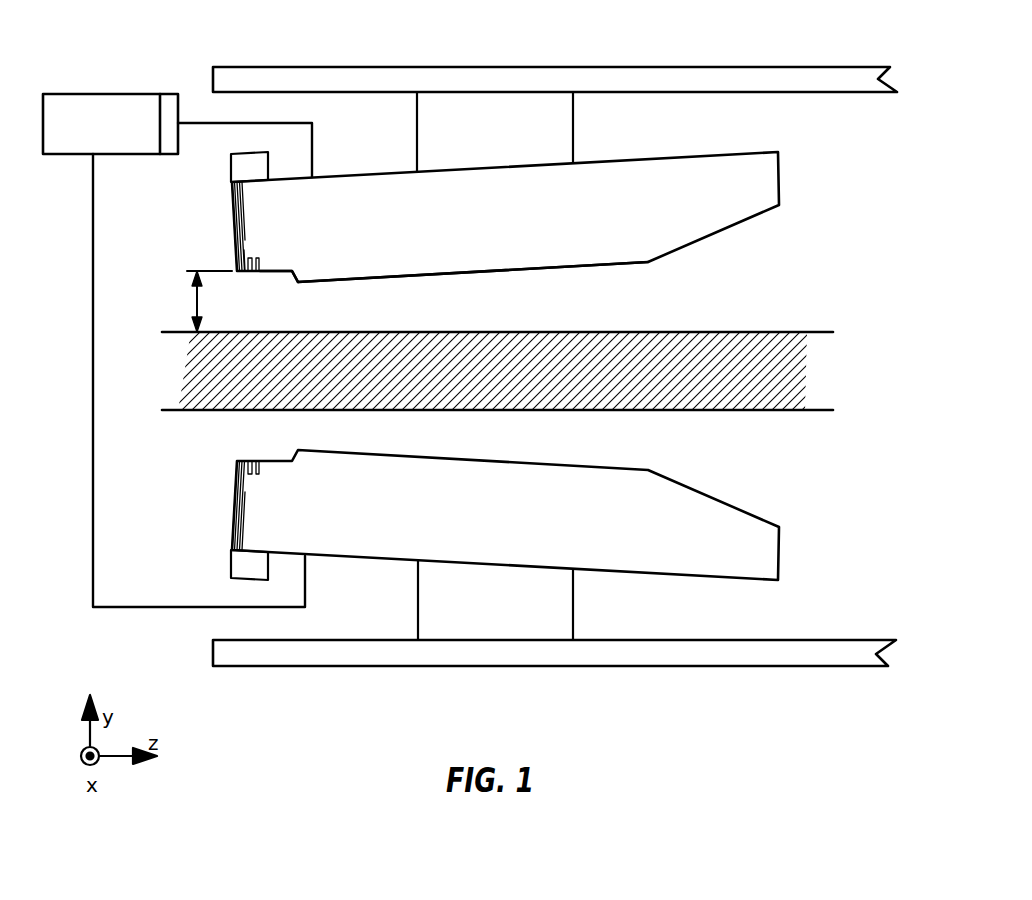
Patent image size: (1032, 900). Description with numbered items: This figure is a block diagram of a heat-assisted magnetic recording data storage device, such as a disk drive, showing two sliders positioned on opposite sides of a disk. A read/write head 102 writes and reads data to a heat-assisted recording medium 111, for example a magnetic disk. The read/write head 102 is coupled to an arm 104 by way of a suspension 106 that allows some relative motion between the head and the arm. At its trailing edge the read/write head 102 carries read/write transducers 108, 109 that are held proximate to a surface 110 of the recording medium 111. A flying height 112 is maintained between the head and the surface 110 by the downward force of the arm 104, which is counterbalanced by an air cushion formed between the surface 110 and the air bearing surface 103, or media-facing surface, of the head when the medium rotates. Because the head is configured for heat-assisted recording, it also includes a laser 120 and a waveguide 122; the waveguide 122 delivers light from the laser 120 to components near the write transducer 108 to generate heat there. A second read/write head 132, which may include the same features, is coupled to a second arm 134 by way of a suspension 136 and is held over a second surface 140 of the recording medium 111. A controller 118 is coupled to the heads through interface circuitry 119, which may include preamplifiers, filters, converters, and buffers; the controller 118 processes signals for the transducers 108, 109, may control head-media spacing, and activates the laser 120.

The read/write head 102 is at (688, 162).
The air bearing surface 103 is at (382, 283).
The arm 104 is at (733, 73).
The suspension 106 is at (575, 123).
The write transducer 108 is at (240, 262).
The read transducer 109 is at (258, 272).
The surface 110 is at (690, 332).
The heat-assisted recording medium 111 is at (791, 379).
The flying height 112 is at (192, 301).
The controller 118 is at (99, 94).
The interface circuitry 119 is at (168, 94).
The laser 120 is at (250, 161).
The waveguide 122 is at (235, 198).
The second read/write head 132 is at (688, 569).
The second arm 134 is at (732, 658).
The suspension 136 is at (575, 606).
The second surface 140 is at (686, 412).